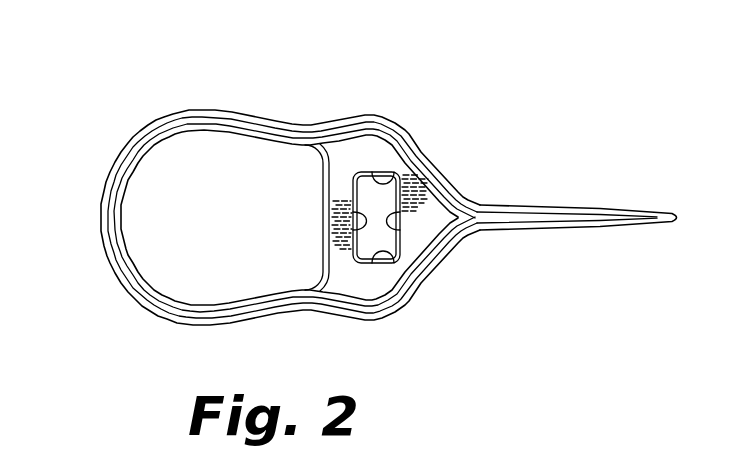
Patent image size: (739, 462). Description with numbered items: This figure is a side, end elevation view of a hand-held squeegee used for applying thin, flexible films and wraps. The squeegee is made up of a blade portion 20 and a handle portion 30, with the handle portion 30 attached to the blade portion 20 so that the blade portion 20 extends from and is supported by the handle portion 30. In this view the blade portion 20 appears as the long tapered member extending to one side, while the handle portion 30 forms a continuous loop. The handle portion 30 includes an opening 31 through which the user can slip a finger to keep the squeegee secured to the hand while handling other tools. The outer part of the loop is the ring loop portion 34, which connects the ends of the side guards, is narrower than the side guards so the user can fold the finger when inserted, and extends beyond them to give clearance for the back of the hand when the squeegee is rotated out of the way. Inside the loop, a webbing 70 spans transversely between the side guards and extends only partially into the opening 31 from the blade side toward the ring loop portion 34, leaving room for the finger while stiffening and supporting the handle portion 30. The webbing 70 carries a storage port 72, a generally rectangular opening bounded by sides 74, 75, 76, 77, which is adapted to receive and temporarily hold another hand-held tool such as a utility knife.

The blade portion 20 is at (678, 165).
The handle portion 30 is at (100, 89).
The opening 31 is at (170, 211).
The ring loop portion 34 is at (131, 310).
The webbing 70 is at (347, 158).
The storage port 72 is at (406, 268).
The side 74 is at (367, 222).
The side 75 is at (393, 222).
The side 76 is at (383, 183).
The side 77 is at (386, 253).